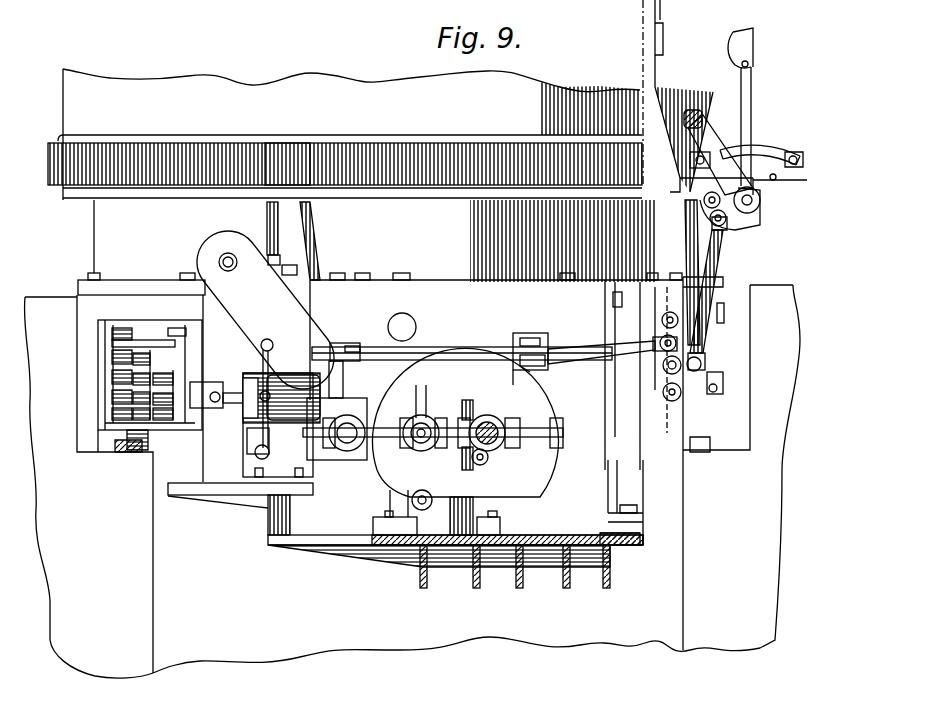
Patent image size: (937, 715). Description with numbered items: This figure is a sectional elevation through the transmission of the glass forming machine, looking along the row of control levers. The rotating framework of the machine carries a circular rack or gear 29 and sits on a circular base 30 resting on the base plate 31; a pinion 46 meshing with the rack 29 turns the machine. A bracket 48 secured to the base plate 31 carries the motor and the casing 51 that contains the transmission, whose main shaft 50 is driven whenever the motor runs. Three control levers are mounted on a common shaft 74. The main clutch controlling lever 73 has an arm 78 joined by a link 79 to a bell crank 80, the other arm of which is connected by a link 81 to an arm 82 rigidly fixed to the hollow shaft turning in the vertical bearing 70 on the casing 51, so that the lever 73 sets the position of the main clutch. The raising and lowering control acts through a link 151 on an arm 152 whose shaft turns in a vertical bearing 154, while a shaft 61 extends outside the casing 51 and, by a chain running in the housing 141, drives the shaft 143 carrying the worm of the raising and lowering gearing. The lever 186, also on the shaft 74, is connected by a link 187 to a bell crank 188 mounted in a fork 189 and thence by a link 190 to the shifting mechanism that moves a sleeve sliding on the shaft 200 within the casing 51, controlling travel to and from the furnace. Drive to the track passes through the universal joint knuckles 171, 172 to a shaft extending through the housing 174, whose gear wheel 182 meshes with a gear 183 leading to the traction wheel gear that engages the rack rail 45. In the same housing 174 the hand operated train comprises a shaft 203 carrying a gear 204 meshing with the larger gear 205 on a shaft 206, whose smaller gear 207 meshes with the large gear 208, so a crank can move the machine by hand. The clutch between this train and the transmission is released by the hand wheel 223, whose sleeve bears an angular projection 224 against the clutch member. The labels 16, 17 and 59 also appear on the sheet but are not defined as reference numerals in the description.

The roller 16 is at (660, 370).
The frame bracket 17 is at (628, 493).
The circular rack 29 is at (346, 148).
The circular base 30 is at (108, 228).
The base plate 31 is at (82, 286).
The rack rail 45 is at (138, 455).
The pinion 46 is at (290, 143).
The bracket 48 is at (553, 557).
The main shaft 50 is at (490, 443).
The casing 51 is at (535, 482).
The gear 59 is at (417, 437).
The shaft 61 is at (352, 430).
The vertical bearing 70 is at (520, 372).
The main clutch controlling lever 73 is at (720, 115).
The shaft 74 is at (755, 205).
The arm 78 is at (725, 228).
The link 79 is at (712, 273).
The bell crank 80 is at (705, 364).
The link 81 is at (556, 362).
The arm 82 is at (535, 368).
The housing 141 is at (210, 263).
The shaft 143 is at (227, 253).
The link 151 is at (439, 348).
The arm 152 is at (335, 343).
The vertical bearing 154 is at (343, 372).
The universal joint knuckle 171 is at (230, 386).
The knuckle 172 is at (250, 441).
The housing 174 is at (150, 368).
The gear wheel 182 is at (148, 445).
The gear 183 is at (175, 328).
The lever 186 is at (747, 32).
The link 187 is at (724, 306).
The bell crank 188 is at (697, 395).
The fork 189 is at (673, 425).
The link 190 is at (550, 336).
The shaft 200 is at (412, 500).
The shaft 203 is at (143, 340).
The gear 204 is at (110, 332).
The larger gear 205 is at (110, 357).
The shaft 206 is at (170, 370).
The smaller gear 207 is at (112, 378).
The large gear 208 is at (112, 403).
The hand wheel 223 is at (256, 448).
The angular projection 224 is at (293, 382).